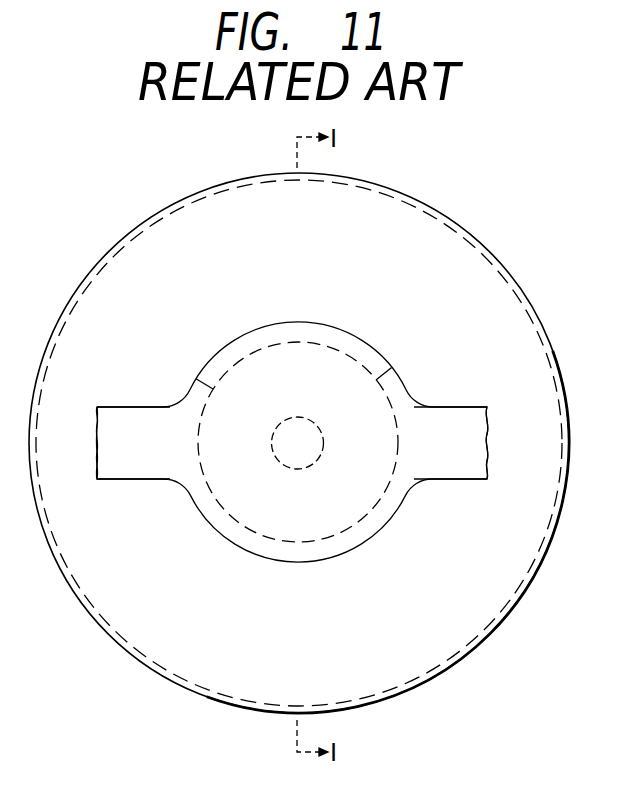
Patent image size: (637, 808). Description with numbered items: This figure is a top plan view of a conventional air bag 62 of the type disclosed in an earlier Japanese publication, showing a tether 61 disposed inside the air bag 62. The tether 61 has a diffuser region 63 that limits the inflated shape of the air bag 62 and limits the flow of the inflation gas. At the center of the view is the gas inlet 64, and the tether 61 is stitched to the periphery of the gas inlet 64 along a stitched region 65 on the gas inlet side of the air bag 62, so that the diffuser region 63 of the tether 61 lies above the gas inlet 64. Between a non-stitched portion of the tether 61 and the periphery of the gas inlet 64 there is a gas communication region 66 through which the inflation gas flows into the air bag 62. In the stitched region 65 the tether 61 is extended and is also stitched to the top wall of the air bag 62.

The tether 61 is at (130, 470).
The air bag 62 is at (413, 216).
The diffuser region 63 is at (340, 561).
The gas inlet 64 is at (281, 466).
The stitched region 65 is at (195, 378).
The gas communication region 66 is at (289, 340).